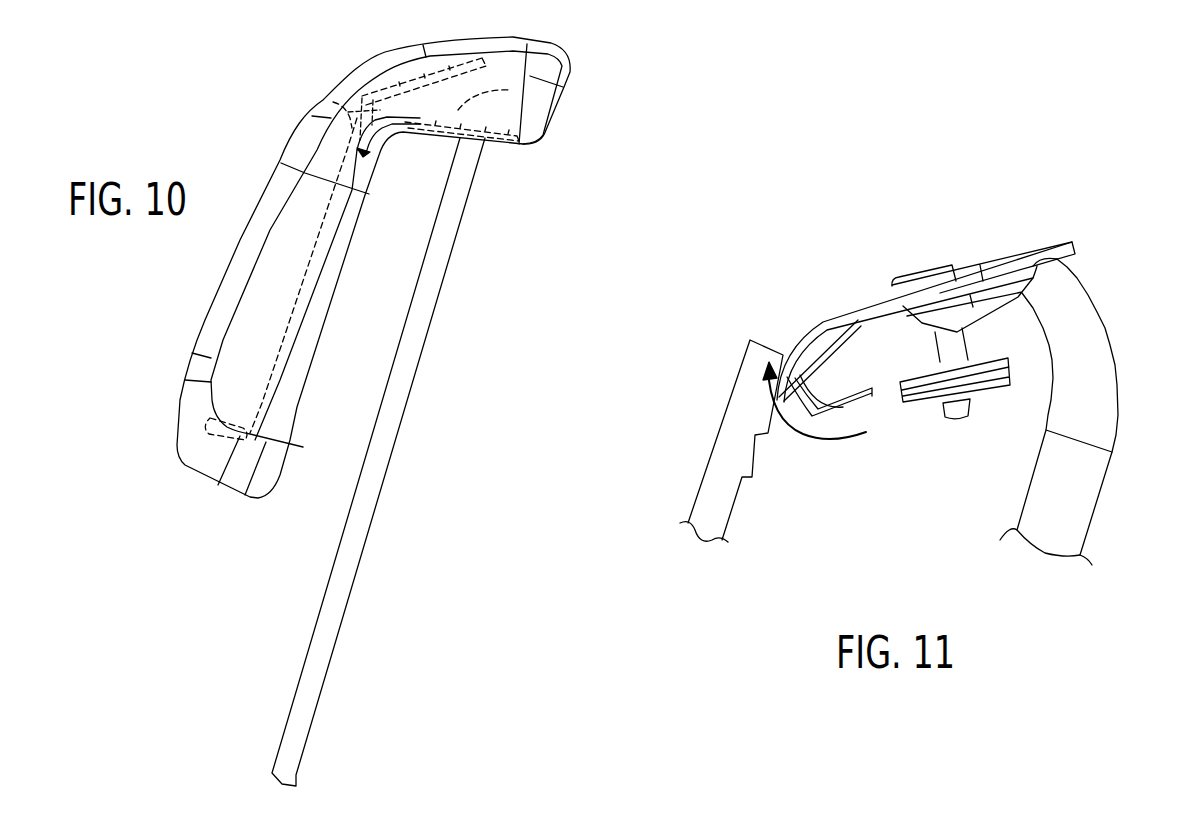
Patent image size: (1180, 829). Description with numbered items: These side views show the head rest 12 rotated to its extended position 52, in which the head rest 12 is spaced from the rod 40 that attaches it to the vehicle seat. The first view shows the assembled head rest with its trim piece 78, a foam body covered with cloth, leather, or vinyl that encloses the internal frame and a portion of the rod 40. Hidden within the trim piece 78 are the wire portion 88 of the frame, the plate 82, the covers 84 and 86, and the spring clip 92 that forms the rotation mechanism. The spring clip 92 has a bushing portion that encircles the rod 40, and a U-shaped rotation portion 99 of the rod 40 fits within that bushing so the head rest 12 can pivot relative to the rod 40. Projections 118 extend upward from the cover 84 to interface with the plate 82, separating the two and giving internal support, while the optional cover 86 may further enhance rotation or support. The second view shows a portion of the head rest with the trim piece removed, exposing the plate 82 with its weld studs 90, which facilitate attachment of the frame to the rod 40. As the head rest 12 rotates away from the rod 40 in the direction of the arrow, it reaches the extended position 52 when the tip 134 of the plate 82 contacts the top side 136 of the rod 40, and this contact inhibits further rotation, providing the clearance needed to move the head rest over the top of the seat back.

In FIG. 10, the head rest 12 is at (582, 48).
In FIG. 10, the rod 40 is at (448, 263).
In FIG. 10, the extended position 52 is at (213, 494).
In FIG. 10, the trim piece 78 is at (258, 220).
In FIG. 10, the cover 84 is at (438, 140).
In FIG. 10, the cover 86 is at (333, 102).
In FIG. 10, the wire portion 88 is at (307, 300).
In FIG. 10, the spring clip 92 is at (400, 140).
In FIG. 11, the spring clip 92 is at (808, 423).
In FIG. 10, the rotation portion 99 is at (369, 72).
In FIG. 10, the projections 118 is at (512, 90).
In FIG. 11, the plate 82 is at (1001, 265).
In FIG. 11, the studs 90 is at (907, 280).
In FIG. 11, the tip 134 is at (1050, 262).
In FIG. 11, the top side 136 is at (1102, 350).